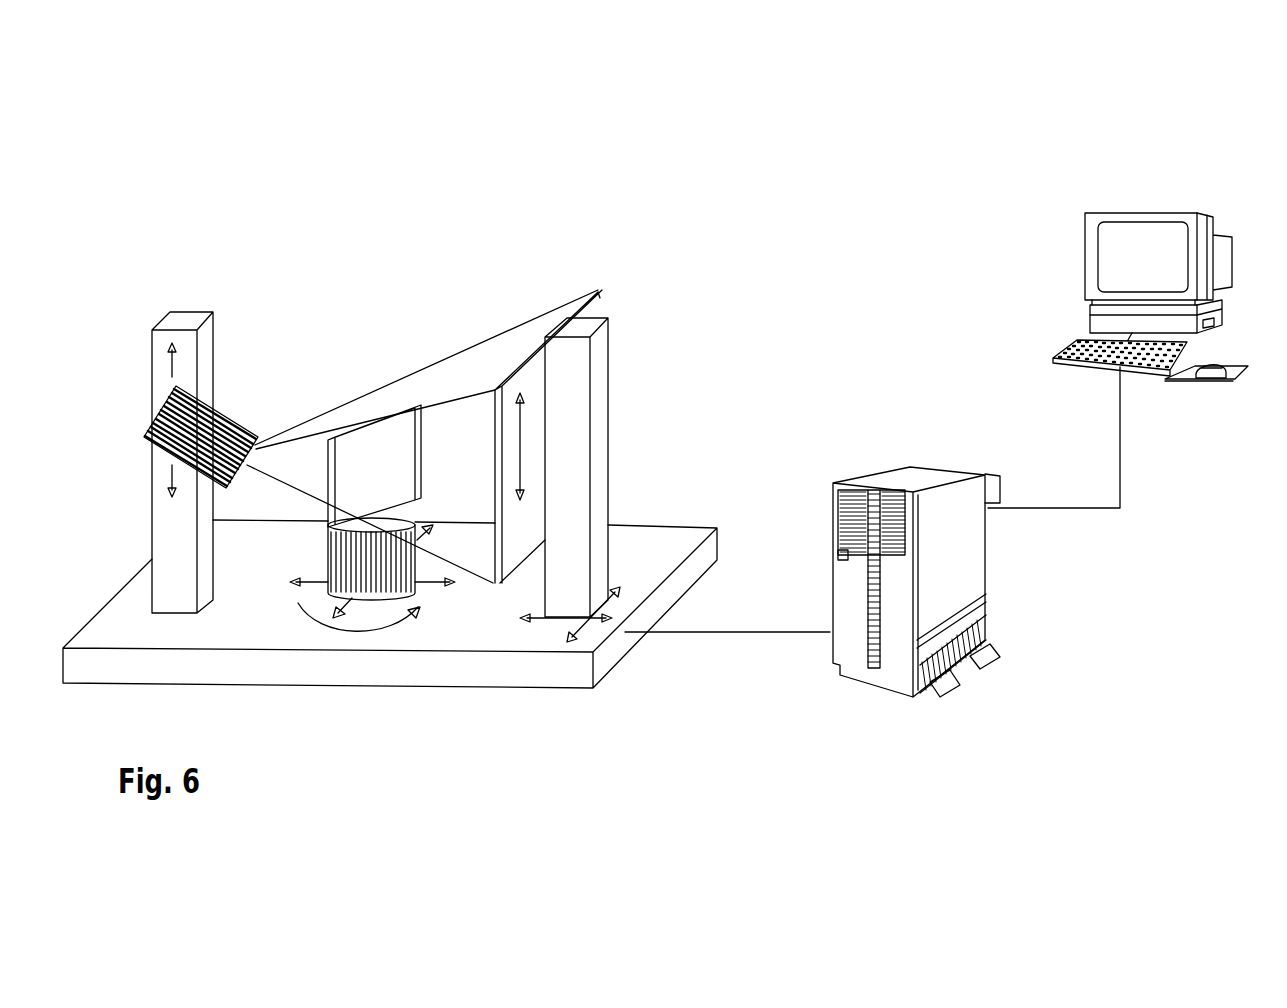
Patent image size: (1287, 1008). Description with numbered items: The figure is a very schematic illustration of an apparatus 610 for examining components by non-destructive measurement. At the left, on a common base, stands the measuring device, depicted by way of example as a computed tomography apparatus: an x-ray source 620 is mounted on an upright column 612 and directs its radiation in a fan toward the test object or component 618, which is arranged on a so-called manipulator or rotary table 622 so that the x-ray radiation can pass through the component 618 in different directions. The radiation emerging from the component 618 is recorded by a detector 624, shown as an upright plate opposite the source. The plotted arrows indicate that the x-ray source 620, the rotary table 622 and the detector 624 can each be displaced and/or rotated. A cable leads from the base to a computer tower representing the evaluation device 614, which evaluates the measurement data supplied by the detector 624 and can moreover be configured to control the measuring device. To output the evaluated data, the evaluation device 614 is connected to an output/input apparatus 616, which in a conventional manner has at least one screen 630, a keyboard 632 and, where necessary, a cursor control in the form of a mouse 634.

The apparatus 610 is at (443, 225).
The column 612 is at (258, 332).
The measuring device / evaluation device 614 is at (913, 470).
The output/input apparatus 616 is at (1093, 214).
The component 618 is at (372, 460).
The x-ray source 620 is at (150, 413).
The rotary table 622 is at (382, 577).
The detector 624 is at (537, 373).
The screen 630 is at (1183, 215).
The keyboard 632 is at (1073, 346).
The cursor control (mouse) 634 is at (1222, 378).